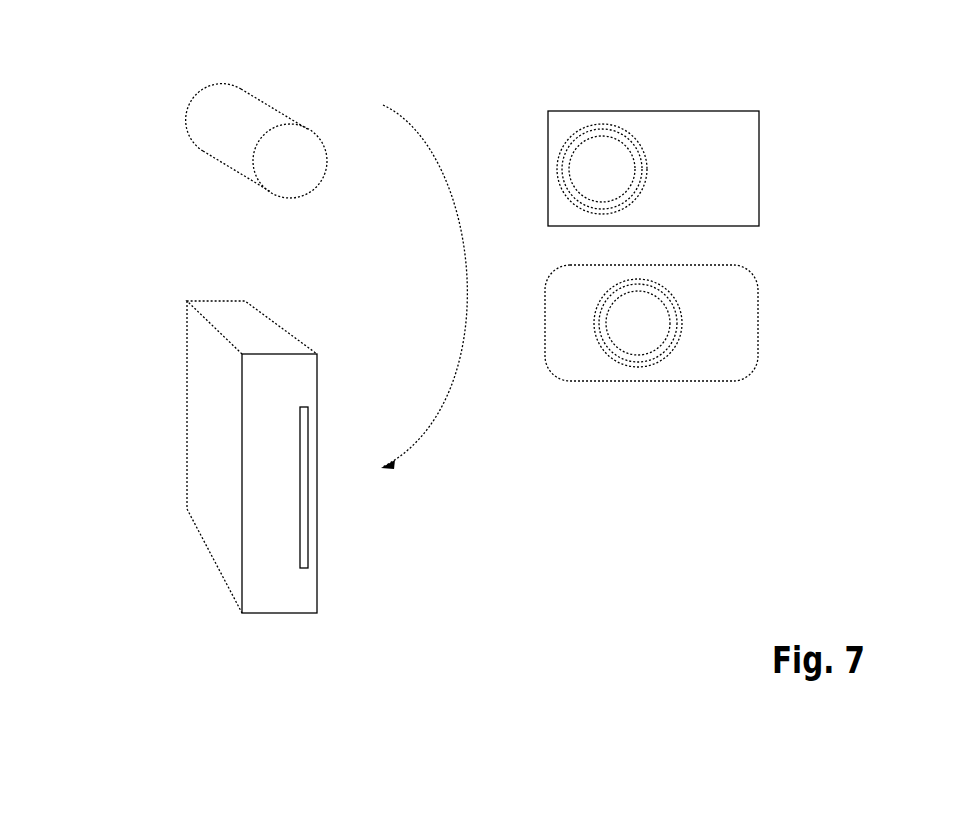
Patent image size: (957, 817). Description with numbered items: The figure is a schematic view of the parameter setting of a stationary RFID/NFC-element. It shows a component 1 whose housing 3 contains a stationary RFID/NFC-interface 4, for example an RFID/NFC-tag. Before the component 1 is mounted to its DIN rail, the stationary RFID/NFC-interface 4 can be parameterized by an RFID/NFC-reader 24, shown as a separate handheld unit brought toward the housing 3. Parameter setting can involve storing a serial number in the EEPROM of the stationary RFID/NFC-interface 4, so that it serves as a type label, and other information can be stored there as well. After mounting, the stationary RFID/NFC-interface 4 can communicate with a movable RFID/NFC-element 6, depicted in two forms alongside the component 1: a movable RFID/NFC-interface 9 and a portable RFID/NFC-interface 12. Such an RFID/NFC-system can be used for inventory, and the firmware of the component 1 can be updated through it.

The component 1 is at (116, 295).
The housing 3 is at (253, 388).
The stationary RFID/NFC-interface 4 is at (222, 510).
The RFID/NFC-reader 24 is at (253, 117).
The movable RFID/NFC-element 6 is at (726, 263).
The movable RFID/NFC-interface 9 is at (769, 166).
The portable RFID/NFC-interface 12 is at (769, 371).